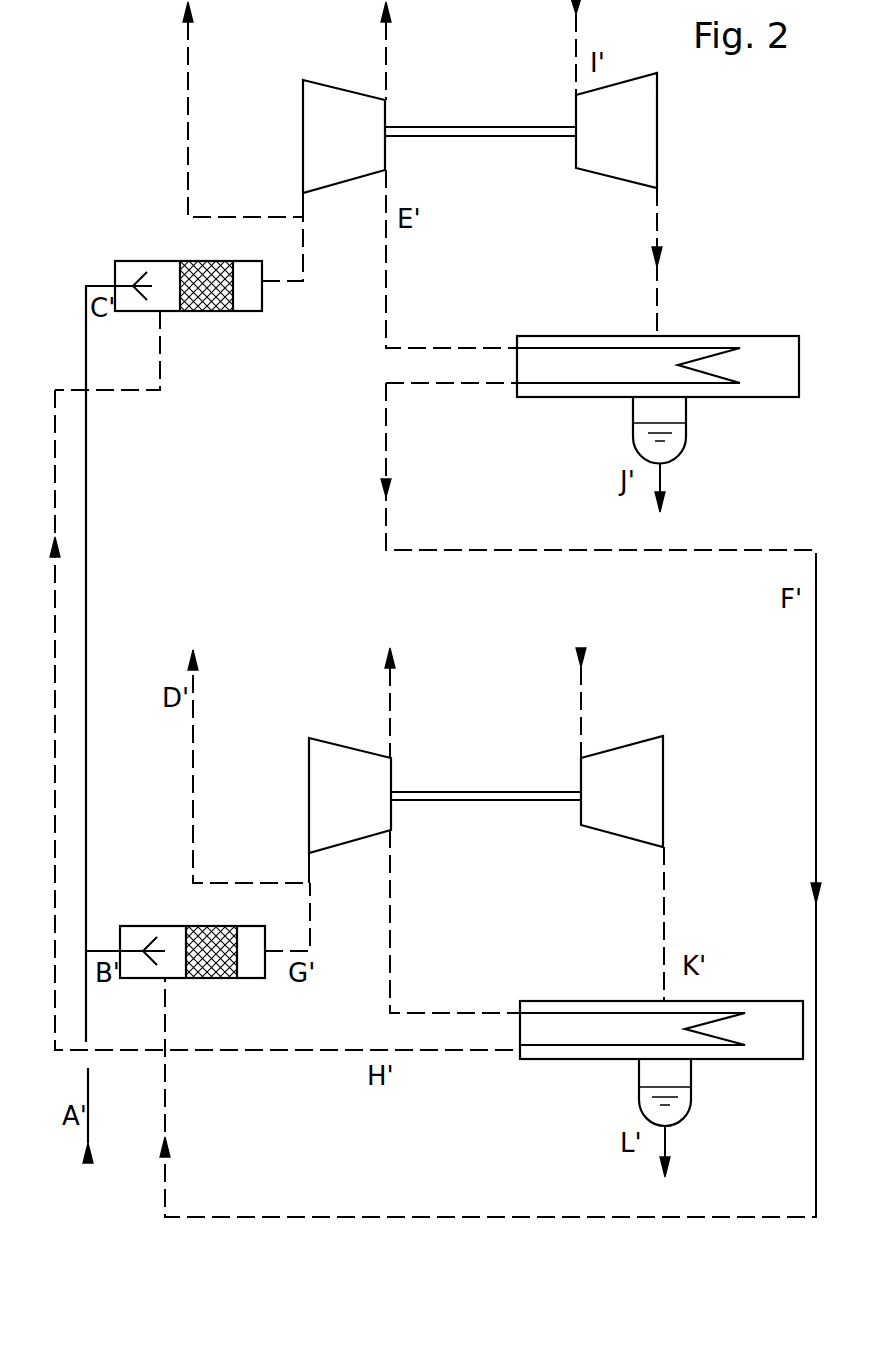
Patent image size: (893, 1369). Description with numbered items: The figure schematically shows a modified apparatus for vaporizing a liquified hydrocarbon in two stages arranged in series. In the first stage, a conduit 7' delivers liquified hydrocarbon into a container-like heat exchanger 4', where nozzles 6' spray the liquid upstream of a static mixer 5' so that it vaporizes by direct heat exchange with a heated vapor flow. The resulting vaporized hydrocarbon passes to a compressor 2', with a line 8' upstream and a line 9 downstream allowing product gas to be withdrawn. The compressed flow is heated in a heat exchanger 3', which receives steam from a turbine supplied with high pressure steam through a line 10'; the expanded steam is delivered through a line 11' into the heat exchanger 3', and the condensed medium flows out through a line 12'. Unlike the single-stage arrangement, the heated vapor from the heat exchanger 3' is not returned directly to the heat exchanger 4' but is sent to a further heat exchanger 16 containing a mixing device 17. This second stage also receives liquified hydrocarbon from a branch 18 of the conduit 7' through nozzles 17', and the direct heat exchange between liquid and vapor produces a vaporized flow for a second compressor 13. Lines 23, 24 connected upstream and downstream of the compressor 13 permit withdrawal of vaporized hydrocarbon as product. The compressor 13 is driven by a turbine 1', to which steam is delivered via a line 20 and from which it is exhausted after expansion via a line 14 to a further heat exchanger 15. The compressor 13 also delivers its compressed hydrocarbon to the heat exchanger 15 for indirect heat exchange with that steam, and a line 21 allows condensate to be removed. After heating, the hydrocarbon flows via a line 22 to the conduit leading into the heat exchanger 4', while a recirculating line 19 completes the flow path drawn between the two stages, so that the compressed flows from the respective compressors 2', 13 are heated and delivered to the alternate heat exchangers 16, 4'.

The turbine 1' is at (649, 791).
The compressor 2' is at (331, 810).
The heat exchanger 3' is at (660, 1063).
The heat exchanger 4' is at (215, 954).
The static mixer 5' is at (223, 933).
The nozzles 6' is at (150, 919).
The conduit 7' is at (112, 1115).
The line 8' is at (248, 766).
The line 9 is at (392, 728).
The line 10' is at (614, 703).
The line 11' is at (701, 924).
The line 12' is at (701, 1149).
The second compressor 13 is at (302, 148).
The line 14 is at (660, 150).
The further heat exchanger 15 is at (550, 400).
The further heat exchanger 16 is at (256, 313).
The mixing device 17 is at (207, 320).
The nozzles 17' is at (146, 250).
The branch 18 is at (88, 652).
The recirculation line 19 is at (308, 1055).
The line 20 is at (578, 43).
The line 21 is at (665, 484).
The line 22 is at (815, 702).
The line 23 is at (190, 100).
The line 24 is at (388, 78).